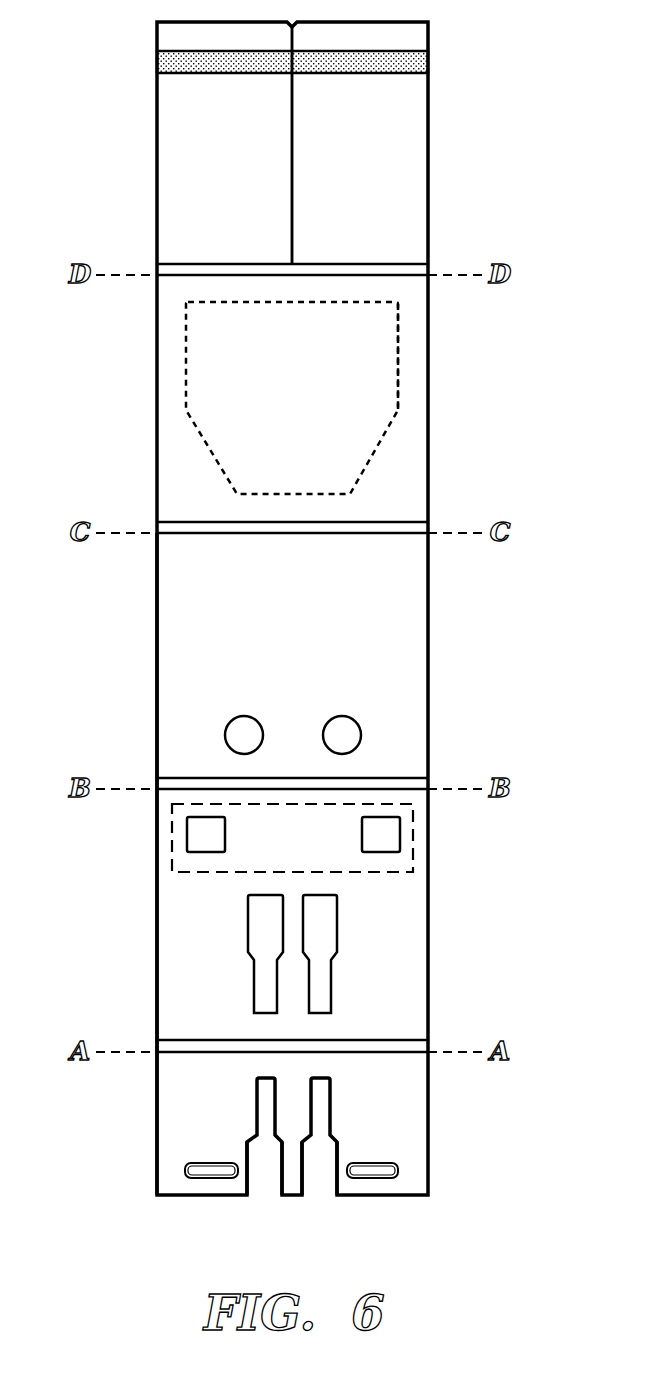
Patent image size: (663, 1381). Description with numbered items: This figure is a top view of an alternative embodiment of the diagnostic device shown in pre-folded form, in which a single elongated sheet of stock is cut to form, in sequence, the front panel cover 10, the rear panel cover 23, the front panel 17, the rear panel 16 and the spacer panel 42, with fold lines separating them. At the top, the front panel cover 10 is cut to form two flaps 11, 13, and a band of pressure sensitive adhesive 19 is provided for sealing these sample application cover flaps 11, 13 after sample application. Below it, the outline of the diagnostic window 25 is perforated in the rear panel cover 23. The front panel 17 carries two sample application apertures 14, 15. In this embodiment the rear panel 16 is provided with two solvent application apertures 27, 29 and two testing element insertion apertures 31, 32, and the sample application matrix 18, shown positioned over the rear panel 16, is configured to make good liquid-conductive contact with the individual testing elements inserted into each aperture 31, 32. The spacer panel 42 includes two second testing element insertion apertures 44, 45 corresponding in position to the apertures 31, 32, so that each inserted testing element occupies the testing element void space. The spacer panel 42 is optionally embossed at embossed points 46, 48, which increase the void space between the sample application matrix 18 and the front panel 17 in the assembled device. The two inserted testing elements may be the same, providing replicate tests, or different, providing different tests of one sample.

The front panel cover 10 is at (443, 66).
The flap 11 is at (197, 127).
The flap 13 is at (392, 152).
The sample application aperture 14 is at (243, 727).
The sample application aperture 15 is at (342, 727).
The rear panel 16 is at (183, 925).
The front panel 17 is at (180, 617).
The sample application matrix 18 is at (405, 815).
The pressure sensitive adhesive 19 is at (175, 63).
The rear panel cover 23 is at (180, 440).
The diagnostic window 25 is at (397, 385).
The solvent application aperture 27 is at (202, 842).
The solvent application aperture 29 is at (378, 842).
The testing element insertion aperture 31 is at (321, 977).
The testing element insertion aperture 32 is at (262, 977).
The spacer panel 42 is at (183, 1090).
The second testing element insertion aperture 44 is at (318, 1168).
The second testing element insertion aperture 45 is at (268, 1168).
The embossed point 46 is at (220, 1170).
The embossed point 48 is at (362, 1170).